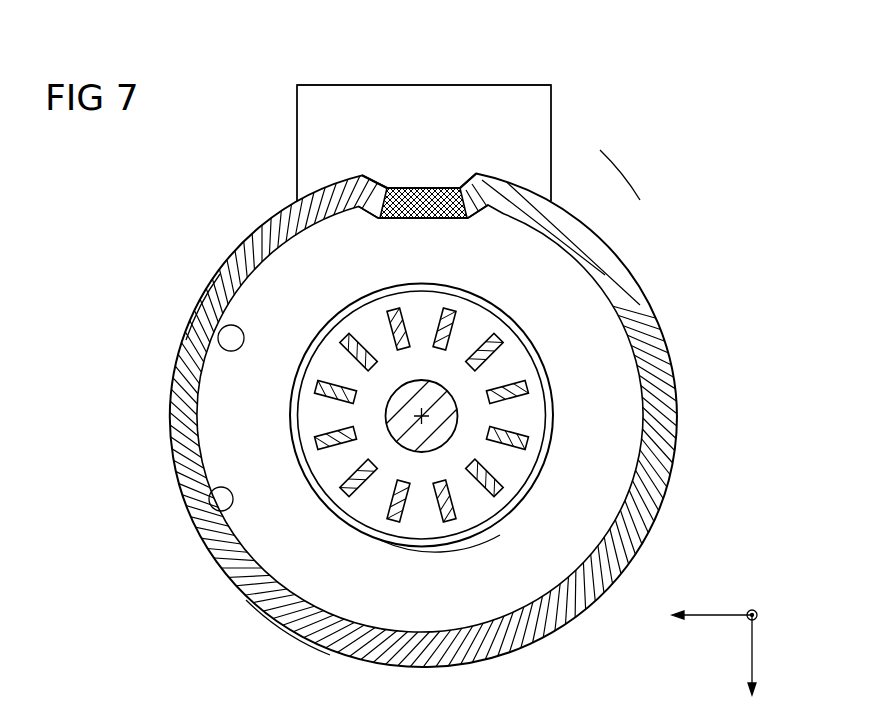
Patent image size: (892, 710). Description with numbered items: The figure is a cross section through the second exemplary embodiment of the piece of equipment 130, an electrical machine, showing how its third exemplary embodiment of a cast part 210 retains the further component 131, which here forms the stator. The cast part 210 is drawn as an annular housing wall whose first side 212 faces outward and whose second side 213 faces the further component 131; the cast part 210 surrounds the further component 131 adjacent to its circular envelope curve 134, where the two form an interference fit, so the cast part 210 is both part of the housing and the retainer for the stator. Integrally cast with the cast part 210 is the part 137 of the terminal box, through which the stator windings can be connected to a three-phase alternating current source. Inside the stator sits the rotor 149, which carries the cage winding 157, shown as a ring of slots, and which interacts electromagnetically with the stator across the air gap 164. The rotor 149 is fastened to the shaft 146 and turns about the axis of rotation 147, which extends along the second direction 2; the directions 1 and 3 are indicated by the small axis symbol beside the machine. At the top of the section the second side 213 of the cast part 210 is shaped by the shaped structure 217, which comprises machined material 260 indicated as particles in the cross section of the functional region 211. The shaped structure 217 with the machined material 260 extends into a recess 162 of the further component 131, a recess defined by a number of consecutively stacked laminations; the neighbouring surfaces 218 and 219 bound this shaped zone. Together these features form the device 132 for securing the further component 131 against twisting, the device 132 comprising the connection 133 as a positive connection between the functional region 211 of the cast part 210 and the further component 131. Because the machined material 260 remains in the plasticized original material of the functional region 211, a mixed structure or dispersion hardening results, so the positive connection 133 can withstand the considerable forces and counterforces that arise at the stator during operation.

The piece of equipment 130 is at (613, 130).
The further component 131 is at (288, 565).
The device for securing against twisting 132 is at (352, 104).
The connection 133 is at (446, 224).
The envelope curve 134 is at (195, 508).
The integrally cast part of terminal box 137 is at (527, 93).
The shaft 146 is at (423, 416).
The axis of rotation 147 is at (443, 440).
The rotor 149 is at (503, 370).
The cage winding 157 is at (450, 333).
The recess 162 is at (358, 224).
The air gap 164 is at (460, 538).
The cast part 210 is at (207, 285).
The functional region 211 is at (434, 135).
The first side 212 is at (247, 226).
The second side 213 is at (190, 343).
The shaped structure 217 is at (364, 178).
The side face 218 is at (440, 180).
The bottom face 219 is at (402, 224).
The machined material 260 is at (410, 186).
The axial direction 1 is at (755, 652).
The second direction 2 is at (760, 610).
The tangential direction 3 is at (716, 612).